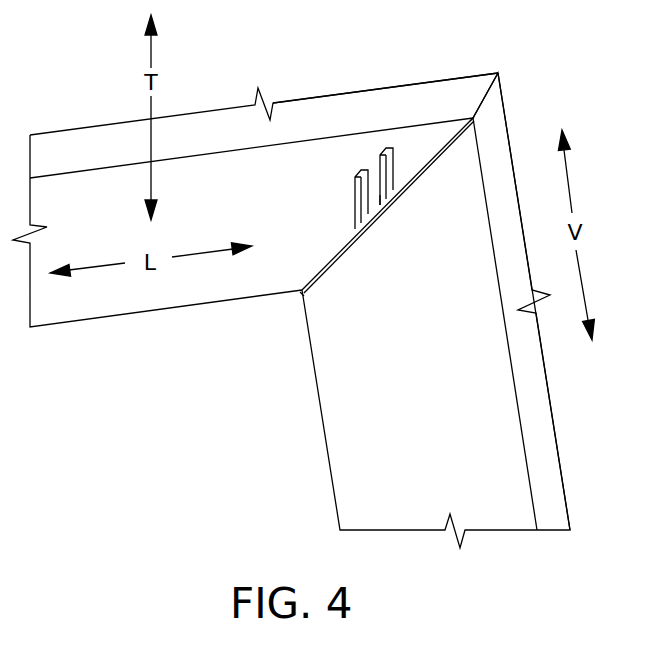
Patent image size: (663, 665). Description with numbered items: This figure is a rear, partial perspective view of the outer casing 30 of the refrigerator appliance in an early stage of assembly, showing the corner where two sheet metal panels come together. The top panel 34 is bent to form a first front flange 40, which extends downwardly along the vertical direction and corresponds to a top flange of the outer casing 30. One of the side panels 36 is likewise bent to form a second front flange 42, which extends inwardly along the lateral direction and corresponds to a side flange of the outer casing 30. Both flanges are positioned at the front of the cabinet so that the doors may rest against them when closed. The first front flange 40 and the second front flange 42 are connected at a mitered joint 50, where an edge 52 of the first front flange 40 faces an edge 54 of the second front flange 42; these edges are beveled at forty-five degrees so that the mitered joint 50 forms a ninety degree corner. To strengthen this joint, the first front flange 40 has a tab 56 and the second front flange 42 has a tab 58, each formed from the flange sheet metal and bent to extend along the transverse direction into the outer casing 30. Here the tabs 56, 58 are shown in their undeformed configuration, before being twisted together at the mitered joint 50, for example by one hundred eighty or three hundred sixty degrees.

The outer casing 30 is at (483, 99).
The top panel 34 is at (340, 112).
The side panel 36 is at (525, 375).
The first front flange 40 is at (105, 290).
The second front flange 42 is at (395, 417).
The mitered joint 50 is at (292, 305).
The edge of first front flange 52 is at (318, 245).
The edge of second front flange 54 is at (448, 172).
The tab of first front flange 56 is at (356, 192).
The tab of second front flange 58 is at (368, 210).